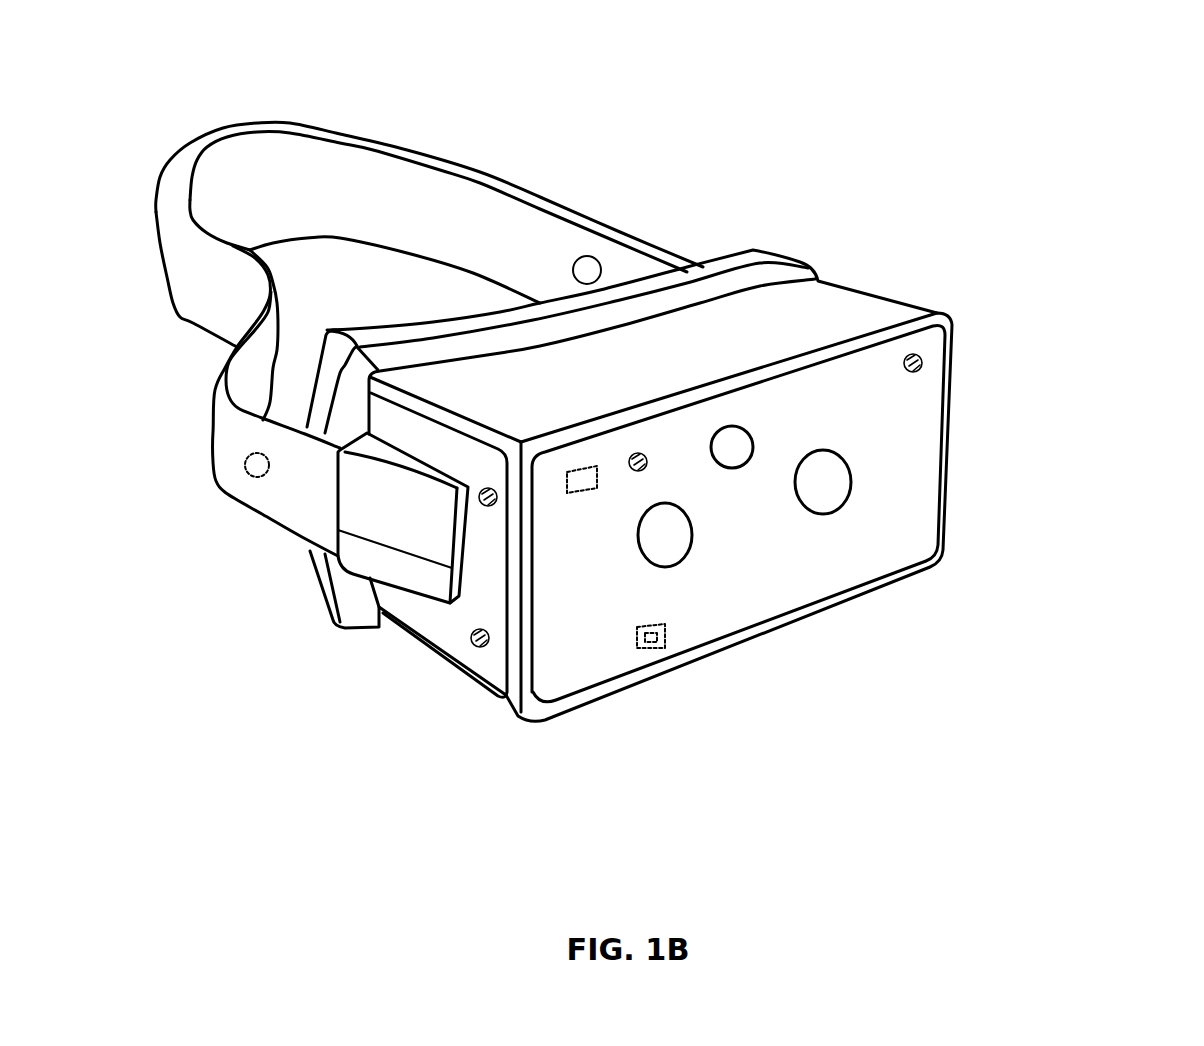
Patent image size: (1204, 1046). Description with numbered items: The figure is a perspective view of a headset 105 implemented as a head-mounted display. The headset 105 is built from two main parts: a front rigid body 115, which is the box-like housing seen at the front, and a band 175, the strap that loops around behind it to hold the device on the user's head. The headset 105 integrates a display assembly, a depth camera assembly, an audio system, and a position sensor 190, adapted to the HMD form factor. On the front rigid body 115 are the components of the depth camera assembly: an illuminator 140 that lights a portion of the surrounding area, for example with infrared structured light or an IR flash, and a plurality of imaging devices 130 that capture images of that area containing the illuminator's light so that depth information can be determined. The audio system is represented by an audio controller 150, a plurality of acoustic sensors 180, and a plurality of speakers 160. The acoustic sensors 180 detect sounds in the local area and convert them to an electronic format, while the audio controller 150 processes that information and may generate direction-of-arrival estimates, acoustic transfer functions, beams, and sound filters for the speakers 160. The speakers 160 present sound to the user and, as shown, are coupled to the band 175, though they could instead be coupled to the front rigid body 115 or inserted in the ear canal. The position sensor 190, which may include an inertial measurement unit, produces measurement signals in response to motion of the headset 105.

The headset 105 is at (244, 93).
The front rigid body 115 is at (948, 312).
The imaging device 130 is at (690, 550).
The illuminator 140 is at (752, 427).
The audio controller 150 is at (570, 494).
The speaker 160 is at (250, 476).
The band 175 is at (562, 208).
The acoustic sensor 180 is at (471, 642).
The position sensor 190 is at (666, 638).